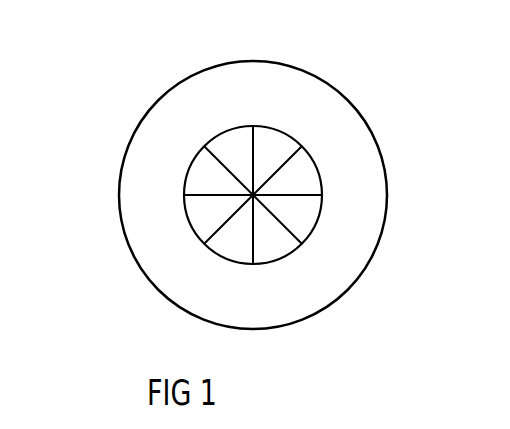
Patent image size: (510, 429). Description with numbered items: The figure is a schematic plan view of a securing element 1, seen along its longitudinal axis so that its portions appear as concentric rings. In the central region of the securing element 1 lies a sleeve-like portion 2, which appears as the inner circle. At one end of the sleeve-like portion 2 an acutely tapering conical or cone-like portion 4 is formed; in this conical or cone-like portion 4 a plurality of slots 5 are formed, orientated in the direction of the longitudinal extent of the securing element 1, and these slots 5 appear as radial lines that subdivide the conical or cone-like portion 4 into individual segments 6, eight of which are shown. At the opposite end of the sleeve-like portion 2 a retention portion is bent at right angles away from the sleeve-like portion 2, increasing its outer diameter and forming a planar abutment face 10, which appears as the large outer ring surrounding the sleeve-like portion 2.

The securing element 1 is at (393, 57).
The sleeve-like portion 2 is at (317, 165).
The conical or cone-like portion 4 is at (255, 148).
The slots 5 is at (247, 137).
The segments 6 is at (206, 148).
The planar abutment face 10 is at (140, 202).